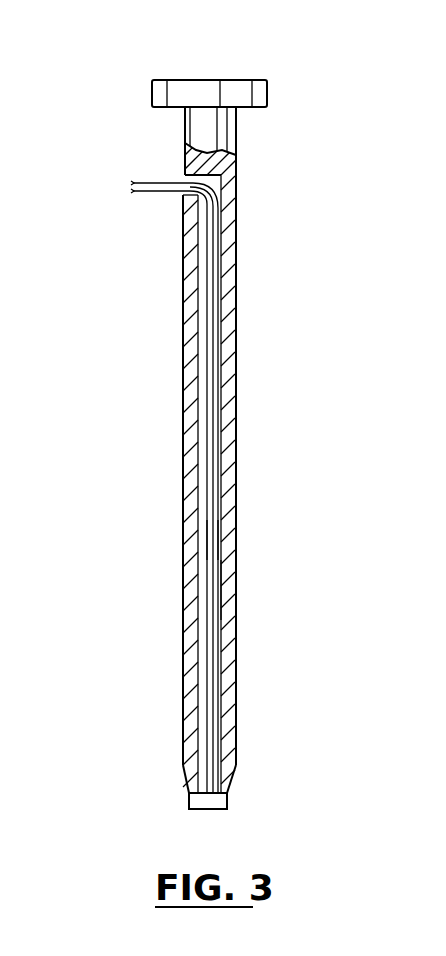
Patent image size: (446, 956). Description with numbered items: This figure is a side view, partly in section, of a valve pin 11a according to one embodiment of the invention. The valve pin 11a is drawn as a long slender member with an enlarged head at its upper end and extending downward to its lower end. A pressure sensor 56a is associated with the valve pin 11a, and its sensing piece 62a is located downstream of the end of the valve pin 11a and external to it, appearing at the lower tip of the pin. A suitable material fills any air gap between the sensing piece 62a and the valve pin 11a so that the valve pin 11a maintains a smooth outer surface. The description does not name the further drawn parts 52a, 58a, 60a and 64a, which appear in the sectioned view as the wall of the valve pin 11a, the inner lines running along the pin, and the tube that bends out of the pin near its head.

The valve pin 11a is at (260, 301).
The outer sheath wall 52a is at (228, 452).
The pressure sensor 56a is at (220, 581).
The inner tube 58a is at (213, 533).
The conductor 60a is at (217, 381).
The sensing piece 62a is at (218, 801).
The side port tube 64a is at (190, 193).